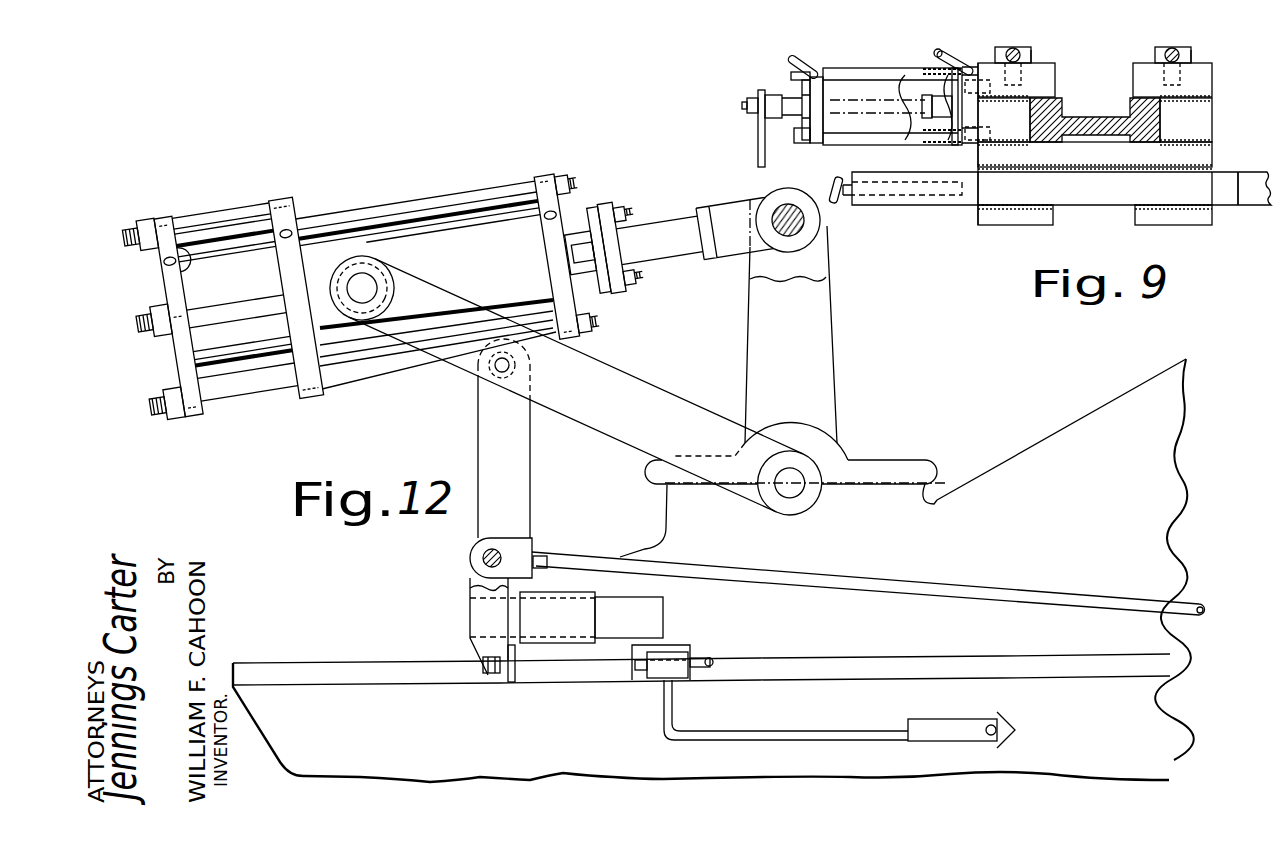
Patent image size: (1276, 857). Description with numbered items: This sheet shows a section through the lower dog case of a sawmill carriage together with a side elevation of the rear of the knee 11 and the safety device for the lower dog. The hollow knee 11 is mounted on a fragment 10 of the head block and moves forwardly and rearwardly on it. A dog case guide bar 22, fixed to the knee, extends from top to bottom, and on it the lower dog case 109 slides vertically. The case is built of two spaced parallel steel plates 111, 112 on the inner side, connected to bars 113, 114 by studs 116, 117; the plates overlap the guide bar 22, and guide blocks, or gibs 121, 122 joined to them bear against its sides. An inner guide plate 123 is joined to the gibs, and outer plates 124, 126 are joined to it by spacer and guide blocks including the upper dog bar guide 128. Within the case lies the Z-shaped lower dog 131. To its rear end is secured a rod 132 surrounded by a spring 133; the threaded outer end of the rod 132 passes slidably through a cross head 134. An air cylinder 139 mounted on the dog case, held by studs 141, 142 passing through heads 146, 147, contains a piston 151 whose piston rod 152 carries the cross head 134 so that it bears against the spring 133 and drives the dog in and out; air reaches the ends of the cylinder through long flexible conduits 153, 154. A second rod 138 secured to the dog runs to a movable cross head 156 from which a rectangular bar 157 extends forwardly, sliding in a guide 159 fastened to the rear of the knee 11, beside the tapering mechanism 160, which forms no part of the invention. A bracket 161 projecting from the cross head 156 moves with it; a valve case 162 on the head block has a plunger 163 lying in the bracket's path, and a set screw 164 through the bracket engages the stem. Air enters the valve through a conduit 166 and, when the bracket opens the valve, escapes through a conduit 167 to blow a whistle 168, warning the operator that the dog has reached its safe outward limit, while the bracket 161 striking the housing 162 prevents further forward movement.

In FIG. 12, the fragment of a head block 10 is at (385, 752).
In FIG. 12, the hollow knee 11 is at (1070, 450).
In FIG. 9, the dog case guide bar 22 is at (1100, 117).
In FIG. 9, the lower dog case 109 is at (990, 226).
In FIG. 9, the steel plate 111 is at (1055, 76).
In FIG. 9, the steel plate 112 is at (1212, 76).
In FIG. 9, the bar 113 is at (1032, 62).
In FIG. 9, the bar 114 is at (1158, 60).
In FIG. 9, the stud 116 is at (1005, 46).
In FIG. 9, the stud 117 is at (1187, 50).
In FIG. 9, the guide block 121 is at (1005, 125).
In FIG. 9, the guide block 122 is at (1212, 110).
In FIG. 9, the inner guide plate 123 is at (1212, 152).
In FIG. 9, the outer plate 124 is at (1035, 225).
In FIG. 9, the outer plate 126 is at (1170, 225).
In FIG. 9, the upper dog bar guide 128 is at (1112, 195).
In FIG. 9, the lower dog 131 is at (1262, 205).
In FIG. 9, the rod 132 is at (838, 205).
In FIG. 9, the spring 133 is at (848, 190).
In FIG. 9, the cross head 134 is at (762, 135).
In FIG. 12, the rod 138 is at (1147, 566).
In FIG. 9, the air cylinder 139 is at (873, 98).
In FIG. 9, the stud 141 is at (792, 76).
In FIG. 9, the stud 142 is at (804, 140).
In FIG. 9, the cylinder head 146 is at (822, 150).
In FIG. 9, the cylinder head 147 is at (968, 138).
In FIG. 9, the piston 151 is at (940, 108).
In FIG. 9, the piston rod 152 is at (925, 103).
In FIG. 9, the air conduit 153 is at (809, 62).
In FIG. 9, the air conduit 154 is at (940, 52).
In FIG. 12, the movable cross head 156 is at (470, 576).
In FIG. 12, the rectangular bar 157 is at (660, 612).
In FIG. 12, the guide 159 is at (563, 645).
In FIG. 12, the tapering mechanism 160 is at (383, 202).
In FIG. 12, the bracket 161 is at (512, 684).
In FIG. 12, the valve case 162 is at (660, 680).
In FIG. 12, the plunger 163 is at (640, 672).
In FIG. 12, the set screw 164 is at (490, 675).
In FIG. 12, the conduit 166 is at (712, 662).
In FIG. 12, the conduit 167 is at (676, 712).
In FIG. 12, the whistle 168 is at (960, 722).